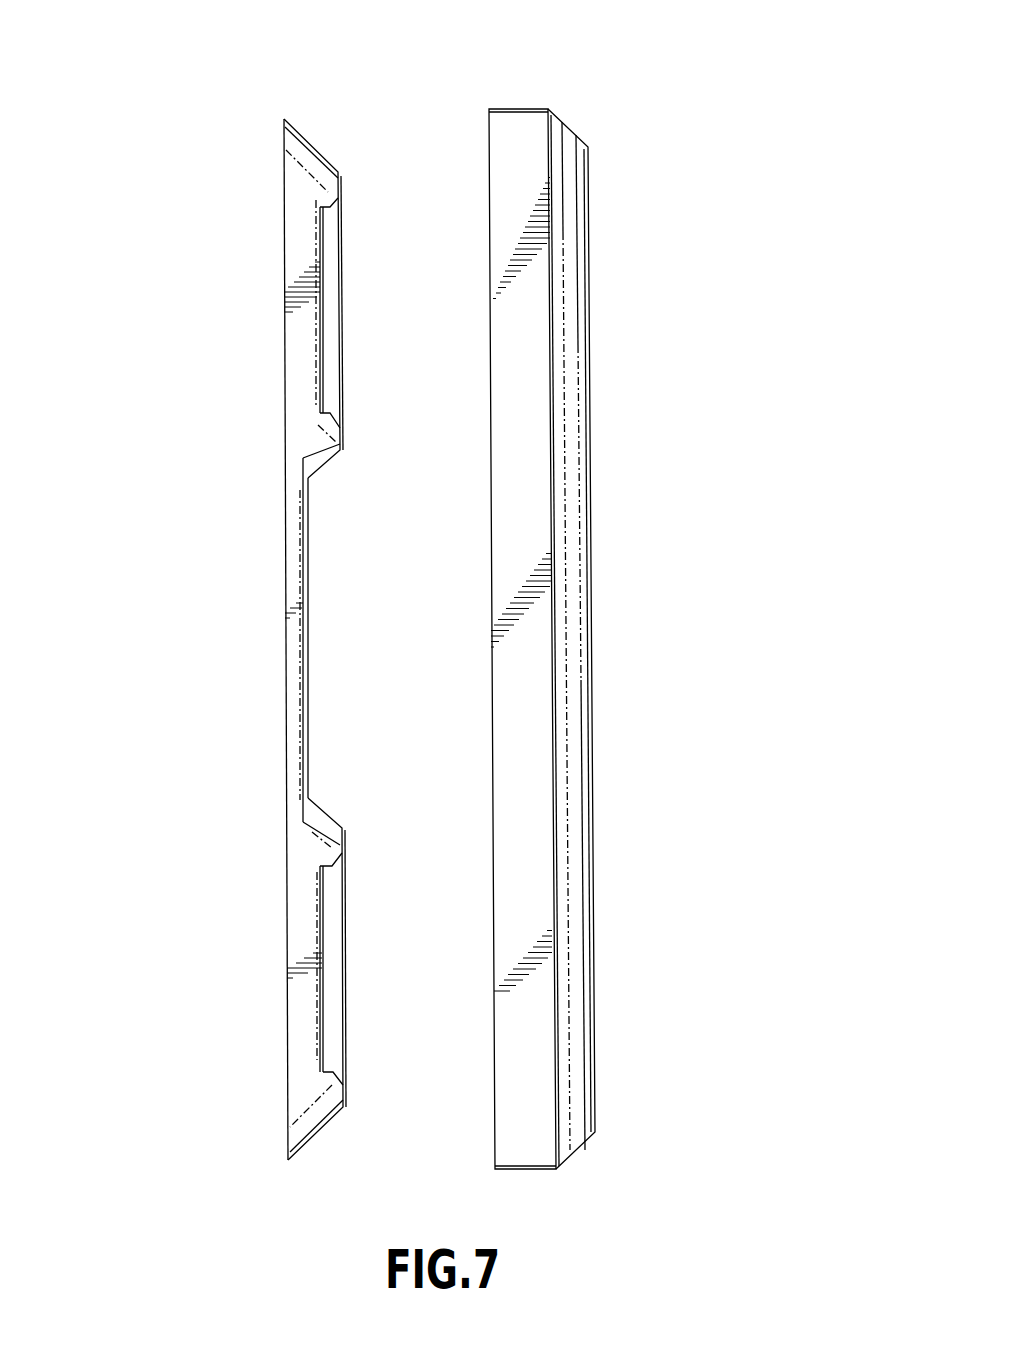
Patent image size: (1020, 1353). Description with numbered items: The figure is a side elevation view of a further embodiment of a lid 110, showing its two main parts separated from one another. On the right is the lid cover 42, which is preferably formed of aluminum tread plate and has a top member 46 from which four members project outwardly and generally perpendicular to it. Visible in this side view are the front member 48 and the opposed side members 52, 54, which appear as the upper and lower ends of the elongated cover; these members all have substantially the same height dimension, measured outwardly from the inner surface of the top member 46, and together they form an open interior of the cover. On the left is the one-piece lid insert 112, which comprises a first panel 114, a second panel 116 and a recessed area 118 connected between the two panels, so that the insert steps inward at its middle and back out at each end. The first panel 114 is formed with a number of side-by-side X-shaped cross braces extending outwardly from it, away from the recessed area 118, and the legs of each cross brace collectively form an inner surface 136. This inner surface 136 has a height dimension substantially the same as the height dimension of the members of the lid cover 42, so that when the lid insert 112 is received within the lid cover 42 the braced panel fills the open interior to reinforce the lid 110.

The lid 110 is at (632, 76).
The lid insert 112 is at (182, 240).
The first panel 114 is at (284, 339).
The second panel 116 is at (285, 996).
The recessed area 118 is at (286, 652).
The inner surface 136 is at (341, 256).
The lid cover 42 is at (632, 250).
The top member 46 is at (570, 628).
The front member 48 is at (522, 520).
The side member 52 is at (520, 108).
The side member 54 is at (521, 1170).